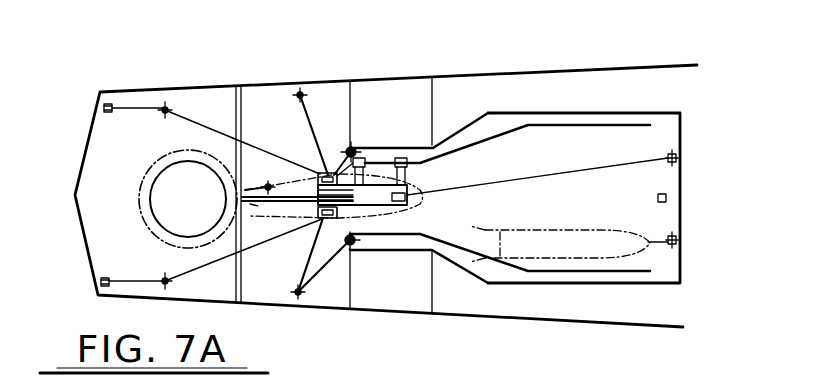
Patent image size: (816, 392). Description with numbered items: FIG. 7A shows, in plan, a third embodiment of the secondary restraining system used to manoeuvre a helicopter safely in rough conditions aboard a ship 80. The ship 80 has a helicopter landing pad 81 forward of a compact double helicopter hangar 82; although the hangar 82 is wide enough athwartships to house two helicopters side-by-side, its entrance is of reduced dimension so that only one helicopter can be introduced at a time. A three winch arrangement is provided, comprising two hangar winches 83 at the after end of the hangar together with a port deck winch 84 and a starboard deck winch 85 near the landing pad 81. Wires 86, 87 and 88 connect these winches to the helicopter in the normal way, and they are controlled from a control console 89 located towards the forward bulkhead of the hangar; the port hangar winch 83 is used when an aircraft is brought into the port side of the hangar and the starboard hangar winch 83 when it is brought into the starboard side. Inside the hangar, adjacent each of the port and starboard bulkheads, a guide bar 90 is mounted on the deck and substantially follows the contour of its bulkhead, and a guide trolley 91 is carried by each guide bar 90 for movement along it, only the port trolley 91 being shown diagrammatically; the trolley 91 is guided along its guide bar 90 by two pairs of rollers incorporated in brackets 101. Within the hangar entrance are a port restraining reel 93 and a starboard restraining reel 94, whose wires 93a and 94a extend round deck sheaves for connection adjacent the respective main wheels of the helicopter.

The ship 80 is at (487, 73).
The helicopter landing pad 81 is at (167, 200).
The compact double helicopter hangar 82 is at (670, 113).
The hangar winches 83 is at (678, 157).
The port deck winch 84 is at (112, 104).
The starboard deck winch 85 is at (105, 280).
The wire 86 is at (546, 178).
The wire 87 is at (215, 127).
The wire 88 is at (277, 242).
The control console 89 is at (668, 199).
The guide bar 90 is at (558, 122).
The guide trolley 91 is at (392, 207).
The port restraining reel 93 is at (353, 150).
The wire 93a is at (344, 151).
The starboard restraining reel 94 is at (358, 247).
The wire 94a is at (317, 278).
The brackets 101 is at (386, 162).